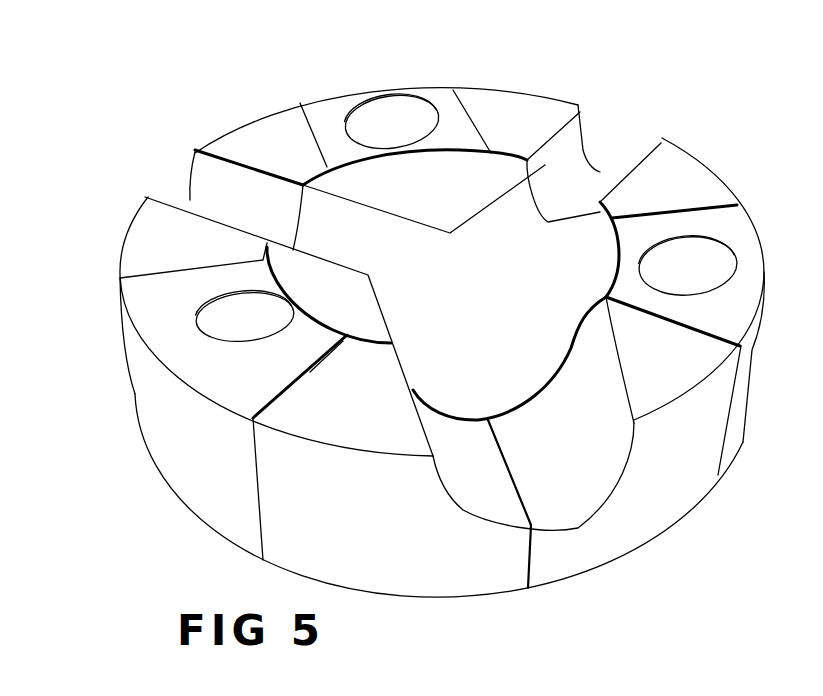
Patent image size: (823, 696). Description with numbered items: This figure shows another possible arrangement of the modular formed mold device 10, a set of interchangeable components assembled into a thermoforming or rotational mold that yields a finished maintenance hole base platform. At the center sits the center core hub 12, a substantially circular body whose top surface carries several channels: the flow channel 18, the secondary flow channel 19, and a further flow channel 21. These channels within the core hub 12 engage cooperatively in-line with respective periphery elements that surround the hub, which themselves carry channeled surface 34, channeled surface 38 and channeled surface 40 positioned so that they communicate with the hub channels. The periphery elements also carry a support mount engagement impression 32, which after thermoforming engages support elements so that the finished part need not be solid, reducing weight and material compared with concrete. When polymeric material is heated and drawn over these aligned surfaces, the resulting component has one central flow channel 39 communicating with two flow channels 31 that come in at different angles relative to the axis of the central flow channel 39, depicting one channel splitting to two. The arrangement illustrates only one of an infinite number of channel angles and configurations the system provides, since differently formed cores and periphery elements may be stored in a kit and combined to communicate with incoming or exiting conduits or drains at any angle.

The modular formed mold device 10 is at (91, 244).
The center core hub 12 is at (583, 252).
The flow channel 18 is at (435, 395).
The secondary flow channel 19 is at (507, 220).
The flow channel 21 is at (378, 233).
The flow channel 31 is at (333, 238).
The support mount engagement impression 32 is at (353, 113).
The channeled surface 34 is at (568, 515).
The channeled surface 38 is at (587, 141).
The central flow channel 39 is at (610, 598).
The channeled surface 40 is at (187, 175).